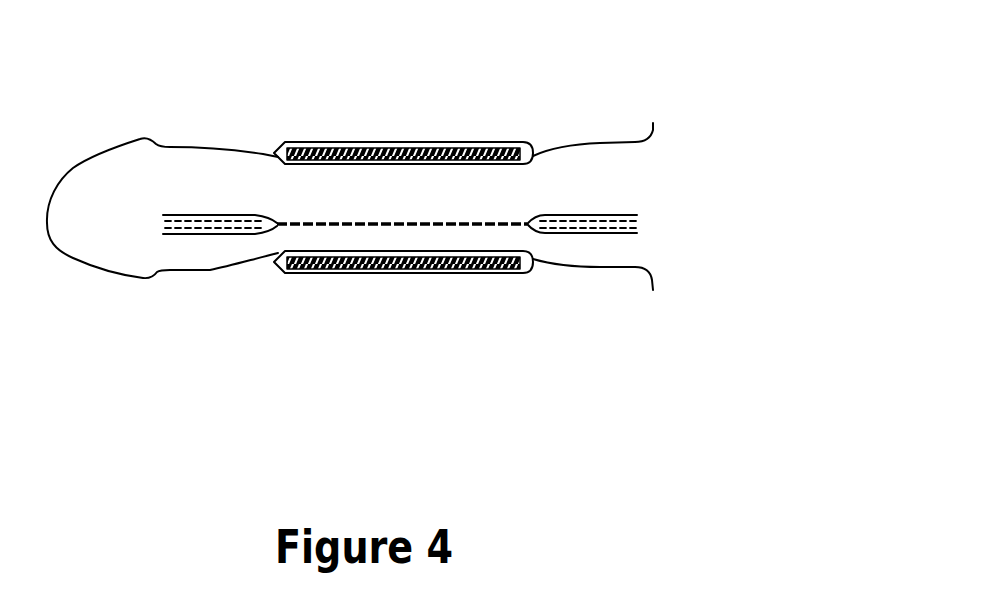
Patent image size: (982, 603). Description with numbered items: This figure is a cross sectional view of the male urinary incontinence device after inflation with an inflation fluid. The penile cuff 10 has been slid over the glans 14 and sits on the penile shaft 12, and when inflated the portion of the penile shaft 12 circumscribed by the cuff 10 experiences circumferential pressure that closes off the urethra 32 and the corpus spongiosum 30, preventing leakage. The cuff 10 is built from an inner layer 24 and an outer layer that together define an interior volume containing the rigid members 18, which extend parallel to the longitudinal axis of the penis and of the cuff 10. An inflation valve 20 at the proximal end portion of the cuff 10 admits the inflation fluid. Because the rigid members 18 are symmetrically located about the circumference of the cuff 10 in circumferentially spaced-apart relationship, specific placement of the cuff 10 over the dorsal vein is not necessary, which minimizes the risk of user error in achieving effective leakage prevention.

The penile cuff 10 is at (363, 107).
The penile shaft 12 is at (619, 165).
The glans 14 is at (95, 187).
The rigid members 18 is at (363, 258).
The inflation valve 20 is at (505, 143).
The inner layer 24 is at (468, 252).
The corpus spongiosum 30 is at (163, 236).
The urethra 32 is at (218, 227).